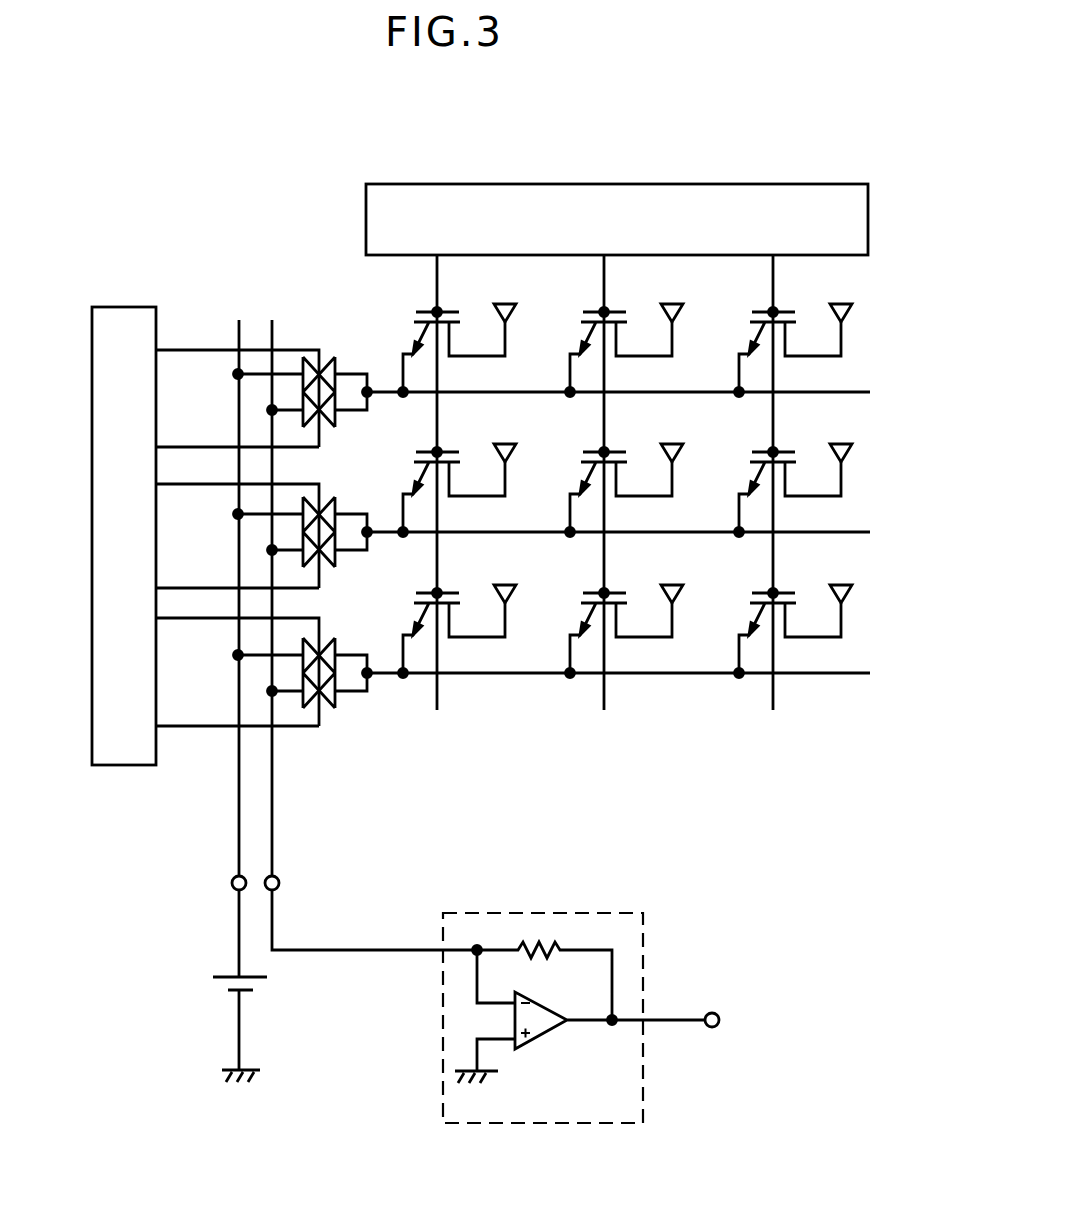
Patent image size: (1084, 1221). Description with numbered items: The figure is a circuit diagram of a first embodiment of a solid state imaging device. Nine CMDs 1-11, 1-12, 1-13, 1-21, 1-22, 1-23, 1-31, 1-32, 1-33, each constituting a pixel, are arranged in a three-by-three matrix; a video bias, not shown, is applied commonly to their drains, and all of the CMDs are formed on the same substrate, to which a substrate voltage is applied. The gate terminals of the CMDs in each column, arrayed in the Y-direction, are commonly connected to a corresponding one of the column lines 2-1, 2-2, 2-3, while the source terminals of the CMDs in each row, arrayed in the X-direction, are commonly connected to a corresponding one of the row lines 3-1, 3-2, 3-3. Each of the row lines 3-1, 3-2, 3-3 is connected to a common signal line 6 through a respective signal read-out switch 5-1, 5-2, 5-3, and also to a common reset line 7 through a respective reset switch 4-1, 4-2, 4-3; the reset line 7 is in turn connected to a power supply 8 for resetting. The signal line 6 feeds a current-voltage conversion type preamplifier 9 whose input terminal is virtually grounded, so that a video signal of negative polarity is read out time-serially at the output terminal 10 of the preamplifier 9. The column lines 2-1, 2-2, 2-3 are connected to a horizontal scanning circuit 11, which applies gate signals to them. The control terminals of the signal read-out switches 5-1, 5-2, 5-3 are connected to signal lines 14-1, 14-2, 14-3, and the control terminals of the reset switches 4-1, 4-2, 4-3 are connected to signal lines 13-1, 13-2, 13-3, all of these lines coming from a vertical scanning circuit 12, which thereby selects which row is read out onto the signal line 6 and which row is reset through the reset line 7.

The CMD 1-11 is at (403, 335).
The CMD 1-12 is at (572, 335).
The CMD 1-13 is at (741, 335).
The CMD 1-21 is at (411, 467).
The CMD 1-22 is at (576, 467).
The CMD 1-23 is at (746, 467).
The CMD 1-31 is at (411, 600).
The CMD 1-32 is at (578, 600).
The CMD 1-33 is at (748, 600).
The column line 2-1 is at (440, 282).
The column line 2-2 is at (607, 282).
The column line 2-3 is at (776, 282).
The row line 3-1 is at (845, 390).
The row line 3-2 is at (850, 530).
The row line 3-3 is at (850, 671).
The reset switch 4-1 is at (334, 372).
The reset switch 4-2 is at (336, 508).
The reset switch 4-3 is at (333, 649).
The signal read-out switch 5-1 is at (330, 430).
The signal read-out switch 5-2 is at (330, 570).
The signal read-out switch 5-3 is at (330, 712).
The signal line 6 is at (274, 849).
The reset line 7 is at (238, 850).
The power supply 8 is at (213, 984).
The preamplifier 9 is at (560, 912).
The output terminal 10 is at (719, 1010).
The horizontal scanning circuit 11 is at (757, 183).
The vertical scanning circuit 12 is at (126, 304).
The signal line 13-1 is at (198, 348).
The signal line 13-2 is at (198, 486).
The signal line 13-3 is at (194, 621).
The signal line 14-1 is at (211, 447).
The signal line 14-2 is at (209, 588).
The signal line 14-3 is at (199, 726).